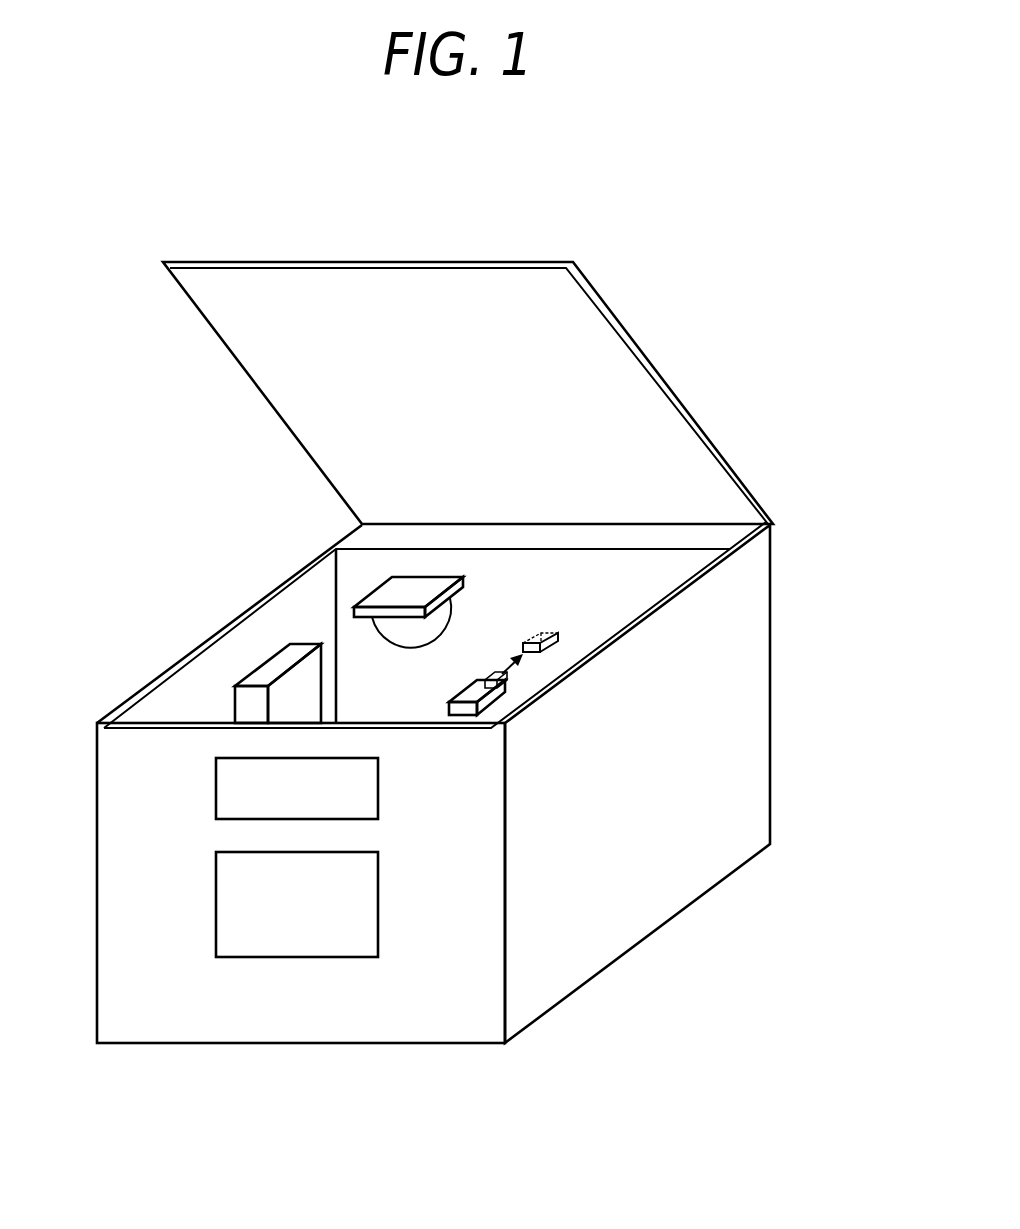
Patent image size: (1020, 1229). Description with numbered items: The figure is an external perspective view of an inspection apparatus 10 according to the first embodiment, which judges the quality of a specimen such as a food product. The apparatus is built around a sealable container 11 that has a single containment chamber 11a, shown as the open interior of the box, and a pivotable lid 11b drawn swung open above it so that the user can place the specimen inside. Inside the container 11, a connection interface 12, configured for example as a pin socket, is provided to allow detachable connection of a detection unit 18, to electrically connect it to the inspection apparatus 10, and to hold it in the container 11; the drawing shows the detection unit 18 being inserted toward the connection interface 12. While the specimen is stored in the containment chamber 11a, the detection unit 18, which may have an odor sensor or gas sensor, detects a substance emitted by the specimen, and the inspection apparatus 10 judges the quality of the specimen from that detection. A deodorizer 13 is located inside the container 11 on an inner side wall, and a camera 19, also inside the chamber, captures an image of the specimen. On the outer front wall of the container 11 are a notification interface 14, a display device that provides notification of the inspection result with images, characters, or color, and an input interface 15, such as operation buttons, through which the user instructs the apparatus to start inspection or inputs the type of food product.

The inspection apparatus 10 is at (778, 283).
The container 11 is at (180, 682).
The containment chamber 11a is at (310, 606).
The lid 11b is at (410, 288).
The connection interface 12 is at (538, 652).
The deodorizer 13 is at (278, 667).
The notification interface 14 is at (293, 905).
The input interface 15 is at (232, 793).
The detection unit 18 is at (490, 700).
The camera 19 is at (427, 627).